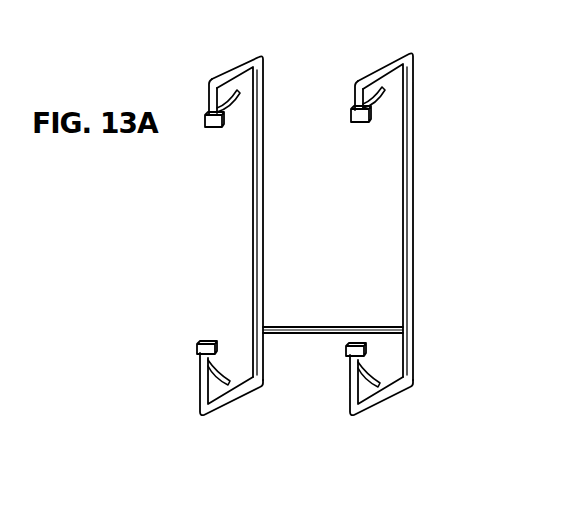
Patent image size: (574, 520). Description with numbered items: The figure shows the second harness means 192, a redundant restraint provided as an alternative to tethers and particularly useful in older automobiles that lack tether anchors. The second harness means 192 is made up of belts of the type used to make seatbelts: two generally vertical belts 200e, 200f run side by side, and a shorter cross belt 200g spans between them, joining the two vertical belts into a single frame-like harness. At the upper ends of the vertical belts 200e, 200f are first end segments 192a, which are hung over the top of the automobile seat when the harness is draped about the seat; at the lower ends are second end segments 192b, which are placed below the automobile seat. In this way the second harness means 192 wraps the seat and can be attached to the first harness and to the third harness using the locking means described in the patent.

The second harness means 192 is at (319, 227).
The first end segments 192a is at (205, 116).
The second end segments 192b is at (198, 372).
The belt 200e is at (263, 210).
The belt 200f is at (413, 217).
The belt 200g is at (345, 326).